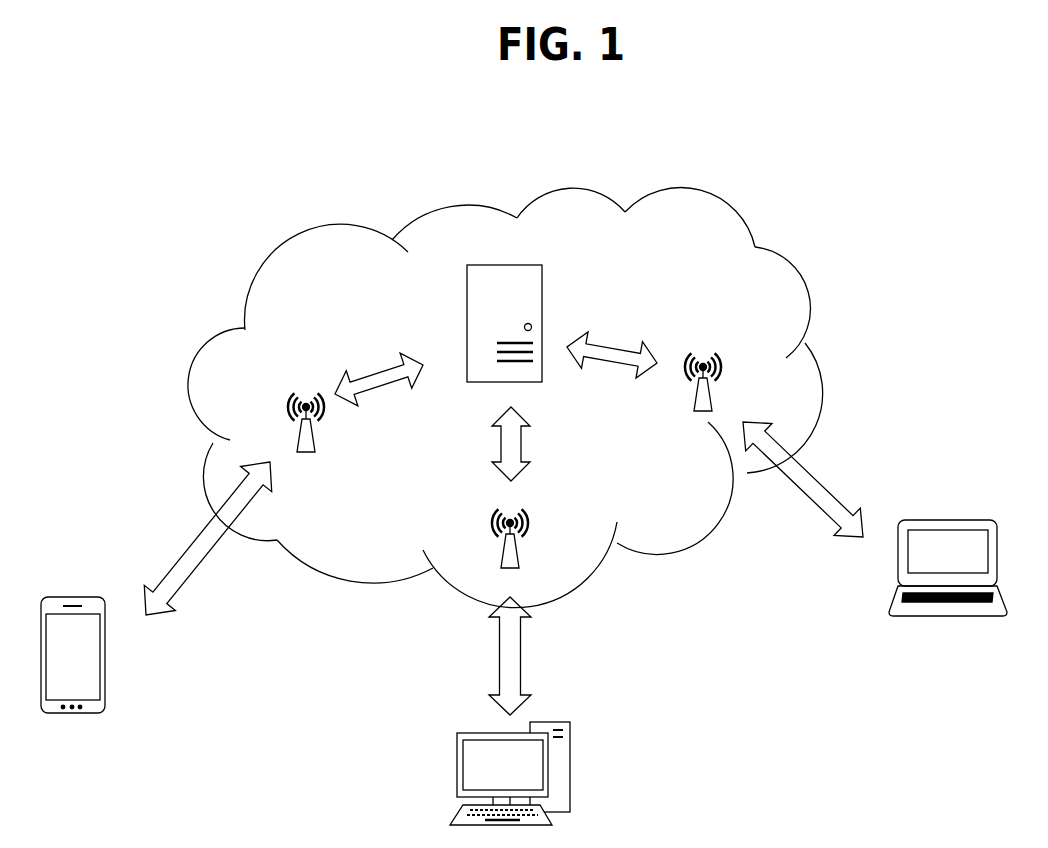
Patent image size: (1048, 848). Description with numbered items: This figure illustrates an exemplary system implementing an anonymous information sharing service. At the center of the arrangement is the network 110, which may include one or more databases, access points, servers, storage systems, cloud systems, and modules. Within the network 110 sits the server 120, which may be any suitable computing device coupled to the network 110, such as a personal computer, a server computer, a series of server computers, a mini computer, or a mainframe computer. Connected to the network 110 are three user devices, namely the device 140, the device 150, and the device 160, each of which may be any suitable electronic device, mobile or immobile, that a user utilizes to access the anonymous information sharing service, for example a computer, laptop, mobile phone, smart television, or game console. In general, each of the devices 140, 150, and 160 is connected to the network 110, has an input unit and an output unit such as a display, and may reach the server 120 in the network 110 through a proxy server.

The network 110 is at (745, 222).
The server 120 is at (546, 256).
The device 140 is at (110, 702).
The device 150 is at (573, 760).
The device 160 is at (947, 512).